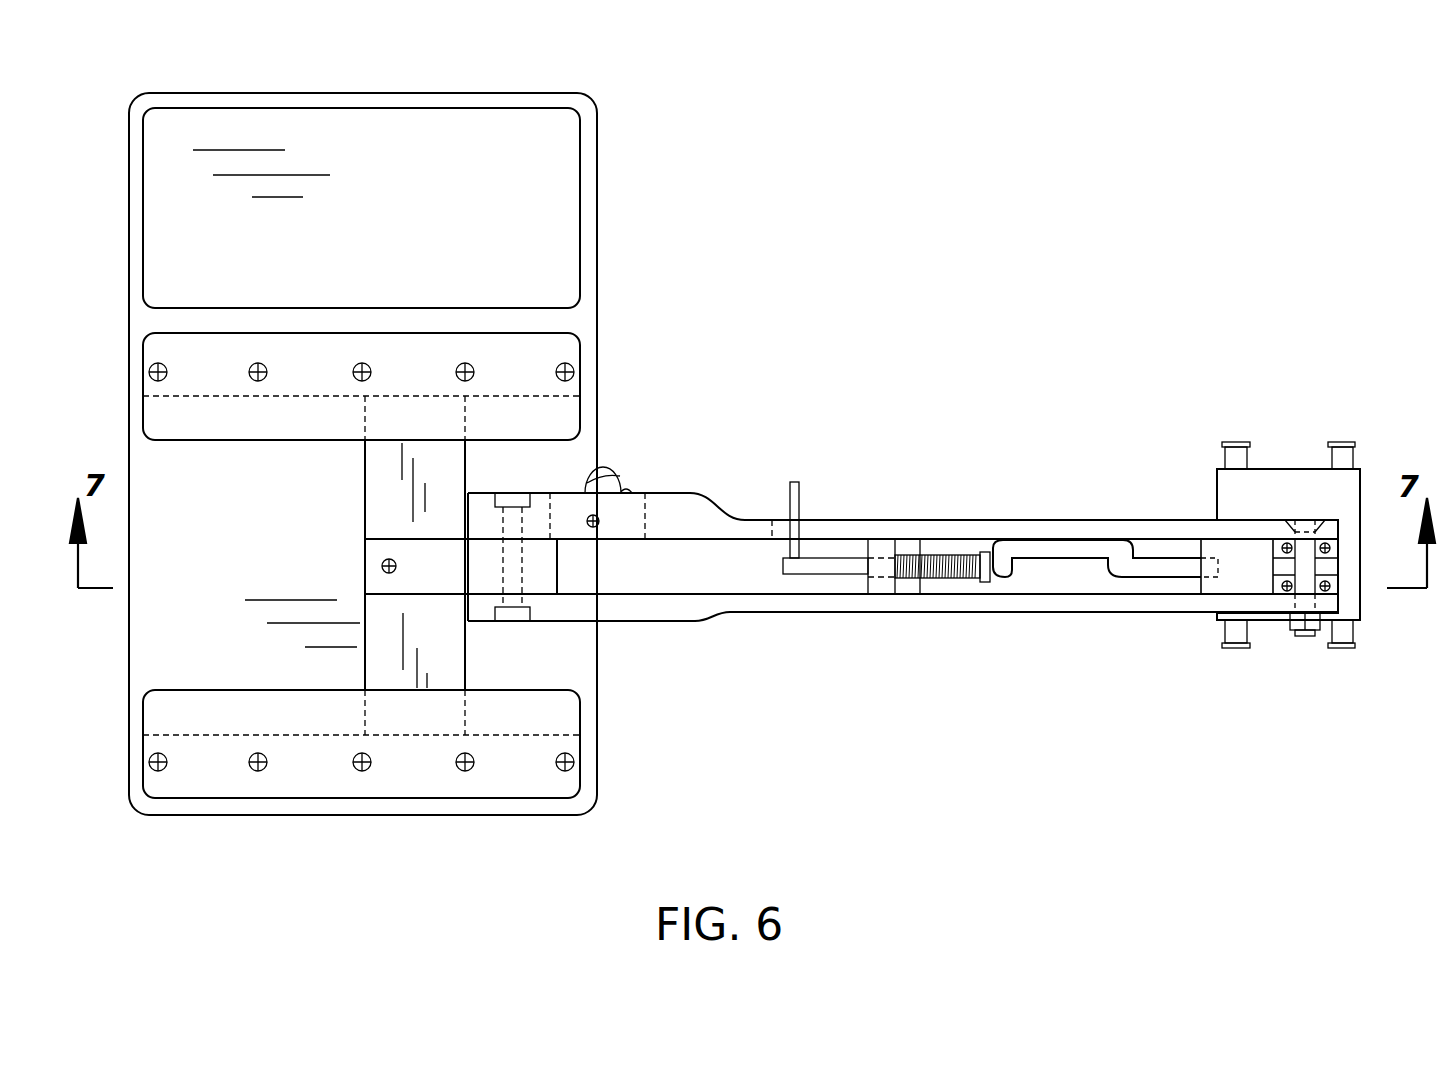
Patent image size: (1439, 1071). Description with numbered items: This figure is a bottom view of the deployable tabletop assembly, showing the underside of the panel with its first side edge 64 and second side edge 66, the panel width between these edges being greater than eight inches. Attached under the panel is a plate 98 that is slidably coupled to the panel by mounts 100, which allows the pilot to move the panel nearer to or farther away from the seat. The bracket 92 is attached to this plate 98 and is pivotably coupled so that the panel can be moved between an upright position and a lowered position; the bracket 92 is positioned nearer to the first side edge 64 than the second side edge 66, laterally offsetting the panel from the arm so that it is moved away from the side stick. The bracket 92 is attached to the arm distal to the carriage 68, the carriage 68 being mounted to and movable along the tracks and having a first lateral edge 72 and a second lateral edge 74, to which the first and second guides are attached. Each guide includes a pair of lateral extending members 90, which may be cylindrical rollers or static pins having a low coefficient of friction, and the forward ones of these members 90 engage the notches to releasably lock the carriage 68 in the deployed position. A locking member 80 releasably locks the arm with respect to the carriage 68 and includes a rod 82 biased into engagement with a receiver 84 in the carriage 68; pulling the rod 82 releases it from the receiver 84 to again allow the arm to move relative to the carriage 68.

The first side edge 64 is at (456, 818).
The second side edge 66 is at (434, 94).
The carriage 68 is at (1245, 572).
The first lateral edge 72 is at (1262, 628).
The second lateral edge 74 is at (1285, 470).
The locking member 80 is at (1052, 567).
The rod 82 is at (1007, 550).
The receiver 84 is at (1208, 550).
The lateral extending members 90 is at (1352, 444).
The bracket 92 is at (422, 557).
The plate 98 is at (418, 648).
The mounts 100 is at (516, 370).